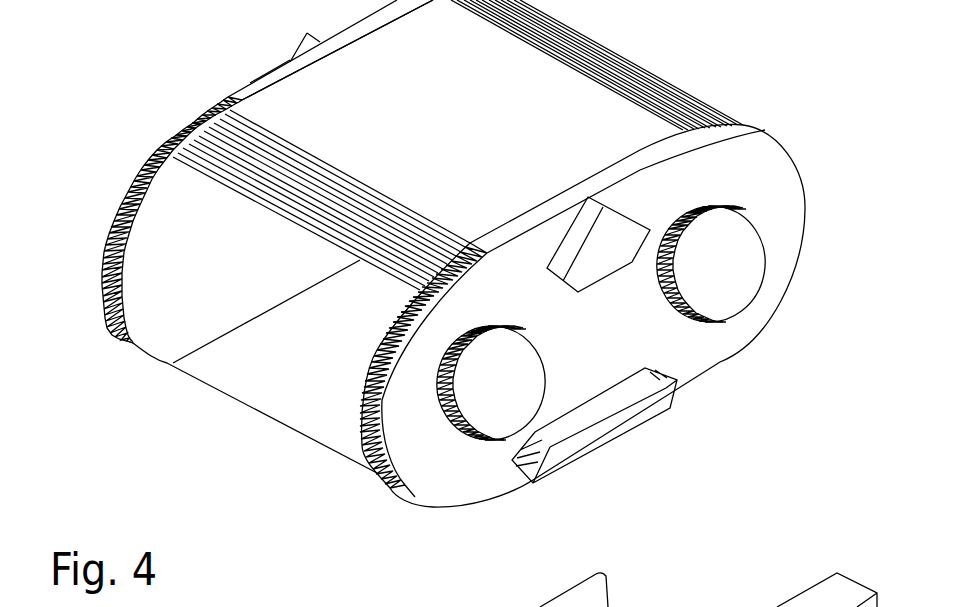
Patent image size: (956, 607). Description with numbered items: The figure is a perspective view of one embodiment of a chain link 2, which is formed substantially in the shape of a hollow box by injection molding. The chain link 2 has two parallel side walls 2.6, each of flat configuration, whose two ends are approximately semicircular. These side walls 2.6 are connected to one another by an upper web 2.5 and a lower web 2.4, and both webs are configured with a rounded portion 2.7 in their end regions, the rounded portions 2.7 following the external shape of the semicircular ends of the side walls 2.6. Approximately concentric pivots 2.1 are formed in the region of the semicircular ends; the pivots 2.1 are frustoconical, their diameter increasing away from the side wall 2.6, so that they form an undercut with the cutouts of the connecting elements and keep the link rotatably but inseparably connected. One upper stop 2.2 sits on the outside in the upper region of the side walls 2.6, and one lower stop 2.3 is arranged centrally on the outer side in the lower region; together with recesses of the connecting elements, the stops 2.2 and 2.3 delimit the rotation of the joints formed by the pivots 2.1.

The chain link 2 is at (778, 170).
The pivot 2.1 is at (718, 288).
The upper stop 2.2 is at (623, 230).
The lower stop 2.3 is at (650, 413).
The lower web 2.4 is at (218, 375).
The upper web 2.5 is at (307, 83).
The side wall 2.6 is at (222, 230).
The rounded portion 2.7 is at (222, 156).